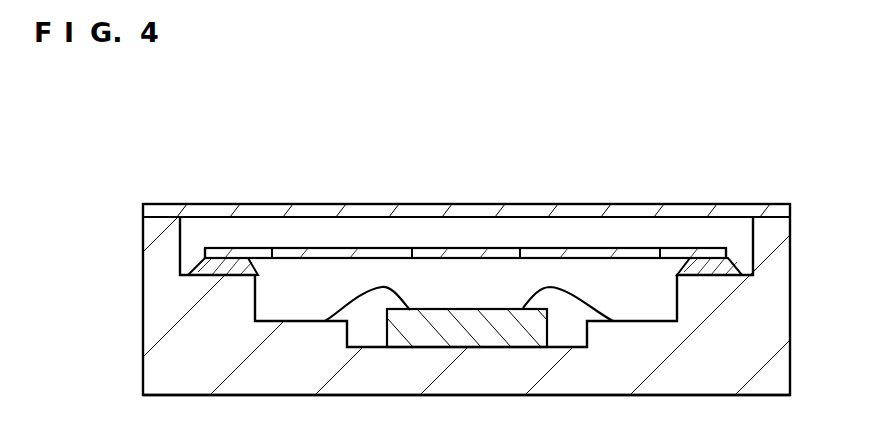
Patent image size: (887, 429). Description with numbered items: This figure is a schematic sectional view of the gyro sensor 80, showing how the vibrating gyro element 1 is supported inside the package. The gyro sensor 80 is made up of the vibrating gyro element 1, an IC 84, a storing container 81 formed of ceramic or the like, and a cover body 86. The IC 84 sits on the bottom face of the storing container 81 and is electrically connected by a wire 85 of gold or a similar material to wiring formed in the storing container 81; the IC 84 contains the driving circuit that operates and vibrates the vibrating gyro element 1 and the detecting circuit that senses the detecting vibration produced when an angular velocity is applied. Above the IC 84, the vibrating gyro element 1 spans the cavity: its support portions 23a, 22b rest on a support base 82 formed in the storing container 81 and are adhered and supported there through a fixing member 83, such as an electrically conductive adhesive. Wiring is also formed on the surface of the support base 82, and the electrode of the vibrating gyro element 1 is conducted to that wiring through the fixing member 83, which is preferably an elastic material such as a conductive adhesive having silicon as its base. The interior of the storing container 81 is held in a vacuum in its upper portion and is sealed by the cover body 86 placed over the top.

The gyro sensor 80 is at (772, 158).
The storing container 81 is at (790, 370).
The support base 82 is at (228, 292).
The fixing member 83 is at (191, 265).
The IC 84 is at (466, 308).
The wire 85 is at (334, 305).
The cover body 86 is at (468, 204).
The vibrating gyro element 1 is at (500, 244).
The support portion 23a is at (240, 247).
The support portion 22b is at (689, 247).